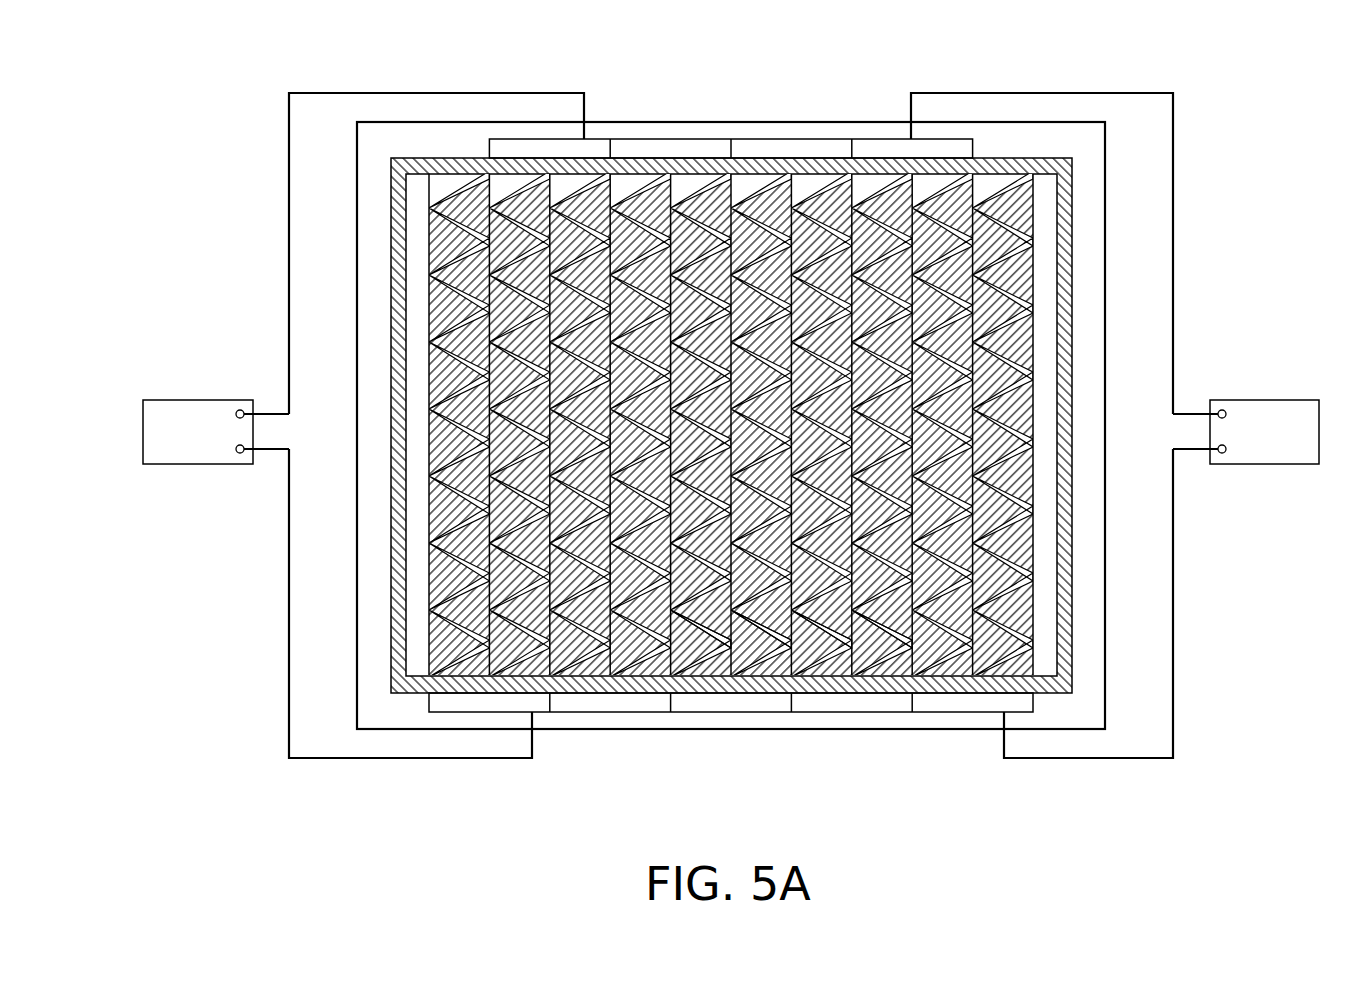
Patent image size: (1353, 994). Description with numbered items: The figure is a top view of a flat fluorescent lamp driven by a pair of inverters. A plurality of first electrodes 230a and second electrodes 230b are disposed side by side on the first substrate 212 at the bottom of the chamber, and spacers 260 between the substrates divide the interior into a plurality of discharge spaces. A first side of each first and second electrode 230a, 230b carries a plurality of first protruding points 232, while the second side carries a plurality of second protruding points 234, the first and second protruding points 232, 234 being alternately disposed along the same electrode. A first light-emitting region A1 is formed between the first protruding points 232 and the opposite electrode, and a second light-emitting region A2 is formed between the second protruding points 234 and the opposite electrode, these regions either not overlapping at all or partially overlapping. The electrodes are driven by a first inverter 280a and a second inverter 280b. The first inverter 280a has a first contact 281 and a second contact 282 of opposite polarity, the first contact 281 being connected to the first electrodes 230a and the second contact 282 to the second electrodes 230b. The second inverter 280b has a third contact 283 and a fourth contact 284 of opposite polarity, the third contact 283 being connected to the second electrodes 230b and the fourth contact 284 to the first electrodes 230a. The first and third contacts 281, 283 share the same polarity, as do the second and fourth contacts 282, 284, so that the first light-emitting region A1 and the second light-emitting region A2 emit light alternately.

The first substrate 212 is at (628, 133).
The spacers 260 is at (697, 166).
The first electrodes 230a is at (798, 183).
The second electrodes 230b is at (741, 183).
The first protruding points 232 is at (848, 640).
The second protruding points 234 is at (857, 625).
The first inverter 280a is at (177, 410).
The second inverter 280b is at (1285, 410).
The first contact 281 is at (240, 455).
The second contact 282 is at (241, 408).
The third contact 283 is at (1220, 408).
The fourth contact 284 is at (1222, 455).
The first light-emitting region A1 is at (750, 650).
The second light-emitting region A2 is at (688, 650).